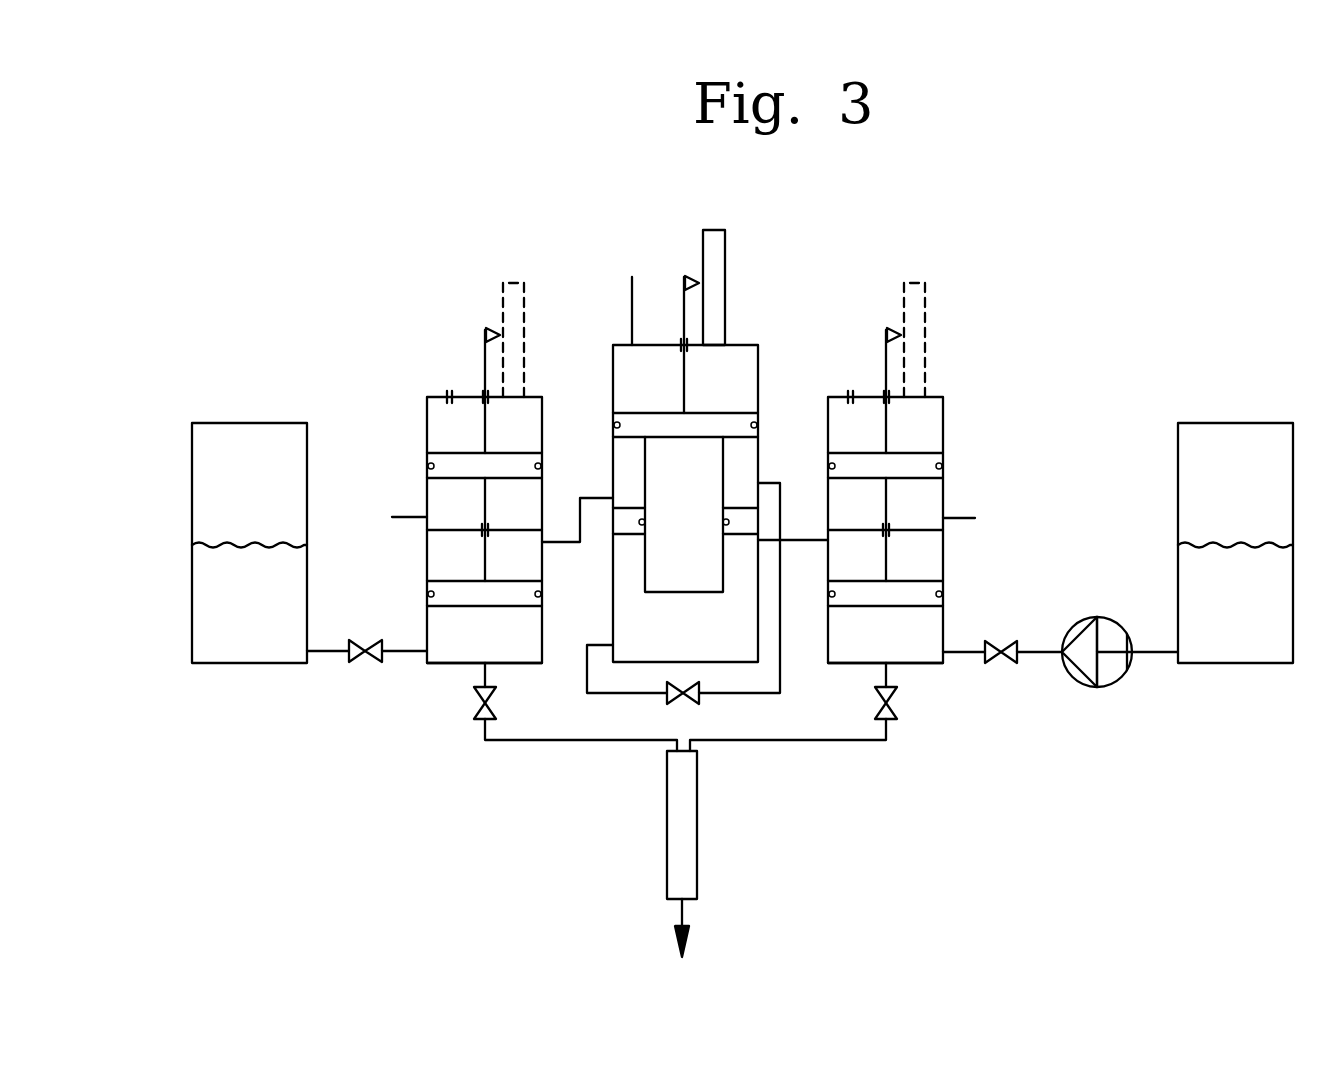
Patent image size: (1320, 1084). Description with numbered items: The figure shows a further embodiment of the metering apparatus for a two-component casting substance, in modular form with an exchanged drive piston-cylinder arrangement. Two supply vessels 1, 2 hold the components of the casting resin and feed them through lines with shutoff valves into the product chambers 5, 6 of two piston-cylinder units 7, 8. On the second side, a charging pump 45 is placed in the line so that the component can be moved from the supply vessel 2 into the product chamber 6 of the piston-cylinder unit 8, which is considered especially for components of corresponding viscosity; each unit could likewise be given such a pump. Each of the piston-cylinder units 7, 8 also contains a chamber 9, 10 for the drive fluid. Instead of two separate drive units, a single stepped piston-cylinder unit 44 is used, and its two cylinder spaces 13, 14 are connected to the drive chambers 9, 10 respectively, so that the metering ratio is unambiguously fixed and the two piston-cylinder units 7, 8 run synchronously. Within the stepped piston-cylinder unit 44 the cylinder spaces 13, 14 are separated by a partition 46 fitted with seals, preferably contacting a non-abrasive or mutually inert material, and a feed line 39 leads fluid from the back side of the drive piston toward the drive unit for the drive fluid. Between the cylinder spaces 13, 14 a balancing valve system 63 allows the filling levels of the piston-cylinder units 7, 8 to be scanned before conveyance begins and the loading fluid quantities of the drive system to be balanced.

The supply vessel 1 is at (260, 614).
The supply vessel 2 is at (1247, 614).
The product chamber 5 is at (492, 647).
The product chamber 6 is at (895, 647).
The piston-cylinder unit 7 is at (483, 473).
The piston-cylinder unit 8 is at (923, 473).
The drive fluid chamber 9 is at (522, 570).
The drive fluid chamber 10 is at (872, 572).
The cylinder space 13 is at (625, 462).
The cylinder space 14 is at (698, 649).
The feed line 39 is at (632, 310).
The stepped piston-cylinder unit 44 is at (770, 456).
The charging pump 45 is at (1110, 688).
The partition 46 is at (752, 523).
The balancing valve system 63 is at (682, 699).